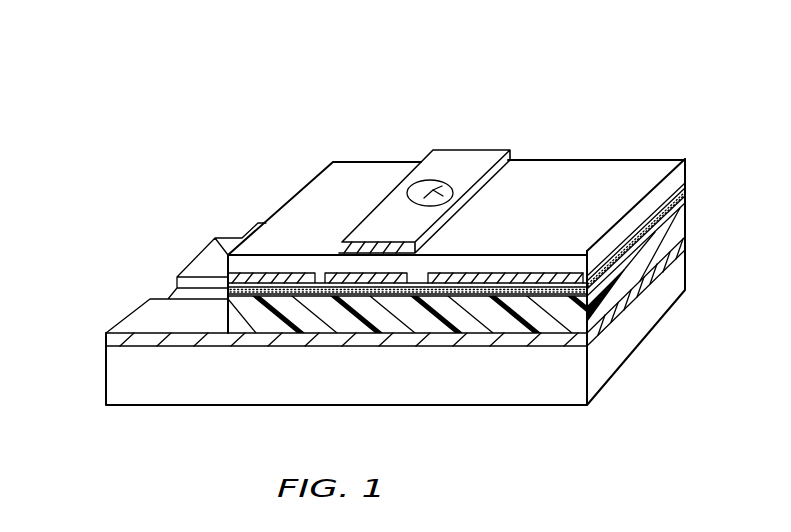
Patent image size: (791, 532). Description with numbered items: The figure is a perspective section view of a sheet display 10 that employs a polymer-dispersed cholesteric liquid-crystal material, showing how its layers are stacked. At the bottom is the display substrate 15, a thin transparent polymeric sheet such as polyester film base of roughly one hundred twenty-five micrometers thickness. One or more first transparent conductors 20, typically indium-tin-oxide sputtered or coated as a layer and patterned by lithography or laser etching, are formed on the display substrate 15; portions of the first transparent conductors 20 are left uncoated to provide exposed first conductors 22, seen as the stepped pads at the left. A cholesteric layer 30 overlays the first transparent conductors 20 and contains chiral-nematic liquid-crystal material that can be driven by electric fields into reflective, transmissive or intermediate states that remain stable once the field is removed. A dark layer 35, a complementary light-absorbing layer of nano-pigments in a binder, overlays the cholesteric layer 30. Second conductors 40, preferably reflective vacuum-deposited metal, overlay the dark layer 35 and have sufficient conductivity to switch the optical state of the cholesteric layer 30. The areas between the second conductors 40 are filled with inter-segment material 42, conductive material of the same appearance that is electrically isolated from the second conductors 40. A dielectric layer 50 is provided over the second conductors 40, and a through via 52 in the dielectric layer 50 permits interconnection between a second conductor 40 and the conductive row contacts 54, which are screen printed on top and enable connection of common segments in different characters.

The display 10 is at (125, 108).
The display substrate 15 is at (117, 377).
The first transparent conductors 20 is at (662, 263).
The exposed first conductors 22 is at (205, 262).
The cholesteric layer 30 is at (687, 222).
The dark layer 35 is at (687, 193).
The second conductors 40 is at (333, 273).
The inter-segment material 42 is at (516, 273).
The dielectric layer 50 is at (347, 186).
The through via 52 is at (433, 190).
The row contacts 54 is at (477, 155).